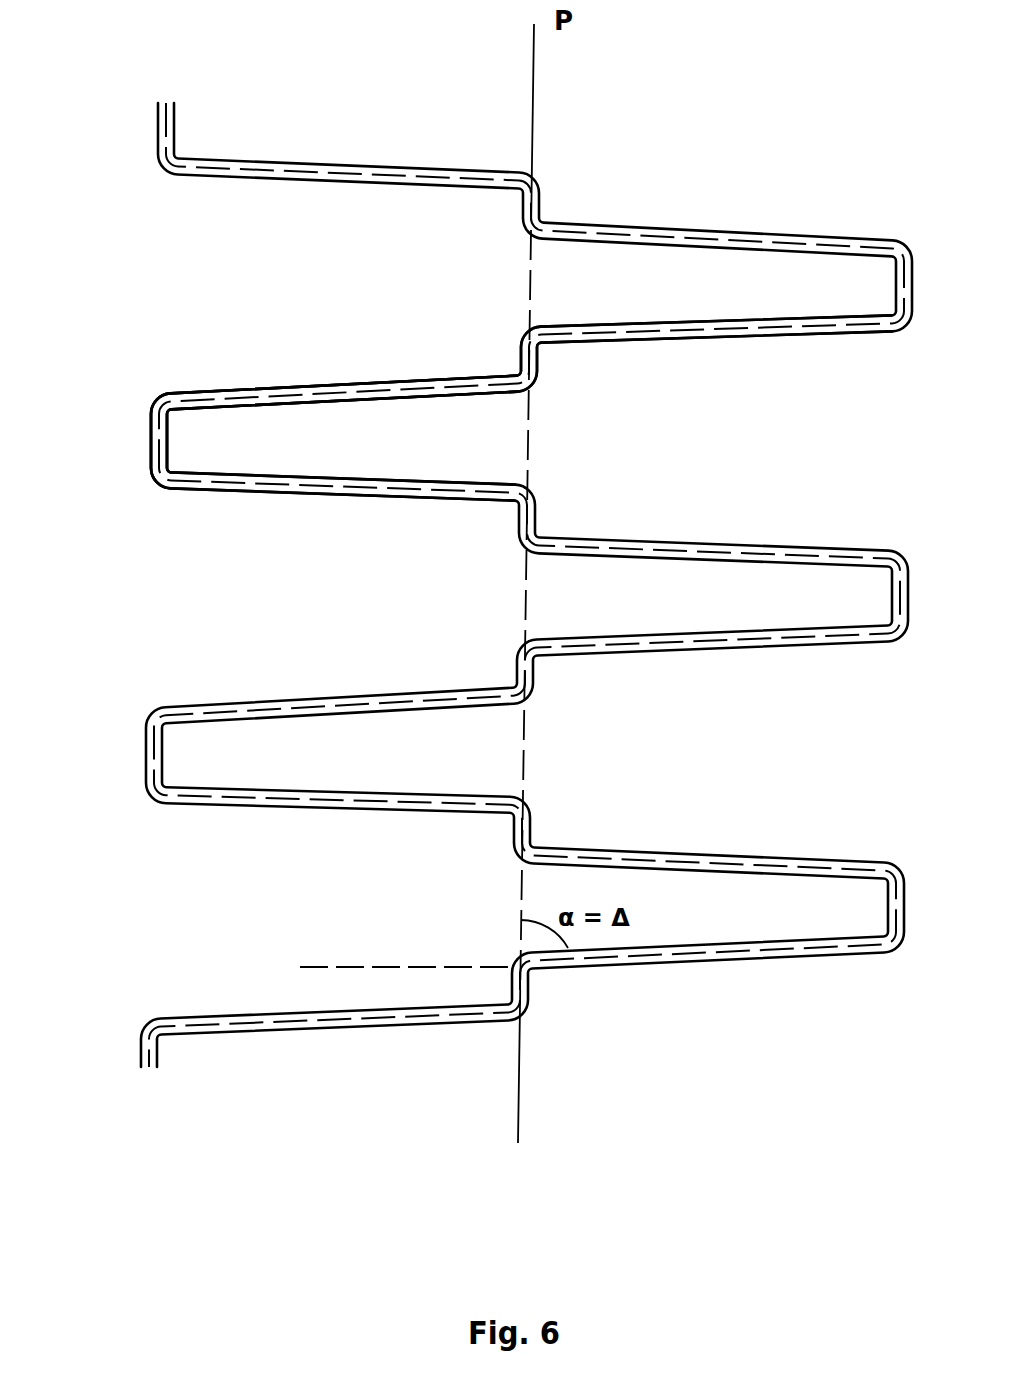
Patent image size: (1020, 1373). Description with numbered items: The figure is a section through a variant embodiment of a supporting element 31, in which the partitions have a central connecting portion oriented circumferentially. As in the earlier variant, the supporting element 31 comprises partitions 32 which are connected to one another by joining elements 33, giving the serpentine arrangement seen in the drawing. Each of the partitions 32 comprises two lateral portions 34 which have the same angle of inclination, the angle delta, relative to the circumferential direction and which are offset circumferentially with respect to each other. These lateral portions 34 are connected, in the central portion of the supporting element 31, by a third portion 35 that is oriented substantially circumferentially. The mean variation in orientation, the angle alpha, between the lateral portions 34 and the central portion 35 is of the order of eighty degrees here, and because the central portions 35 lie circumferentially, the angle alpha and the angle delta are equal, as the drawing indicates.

The supporting element 31 is at (263, 598).
The partitions 32 is at (330, 357).
The joining elements 33 is at (152, 423).
The lateral portions 34 is at (723, 322).
The third portion 35 is at (537, 350).